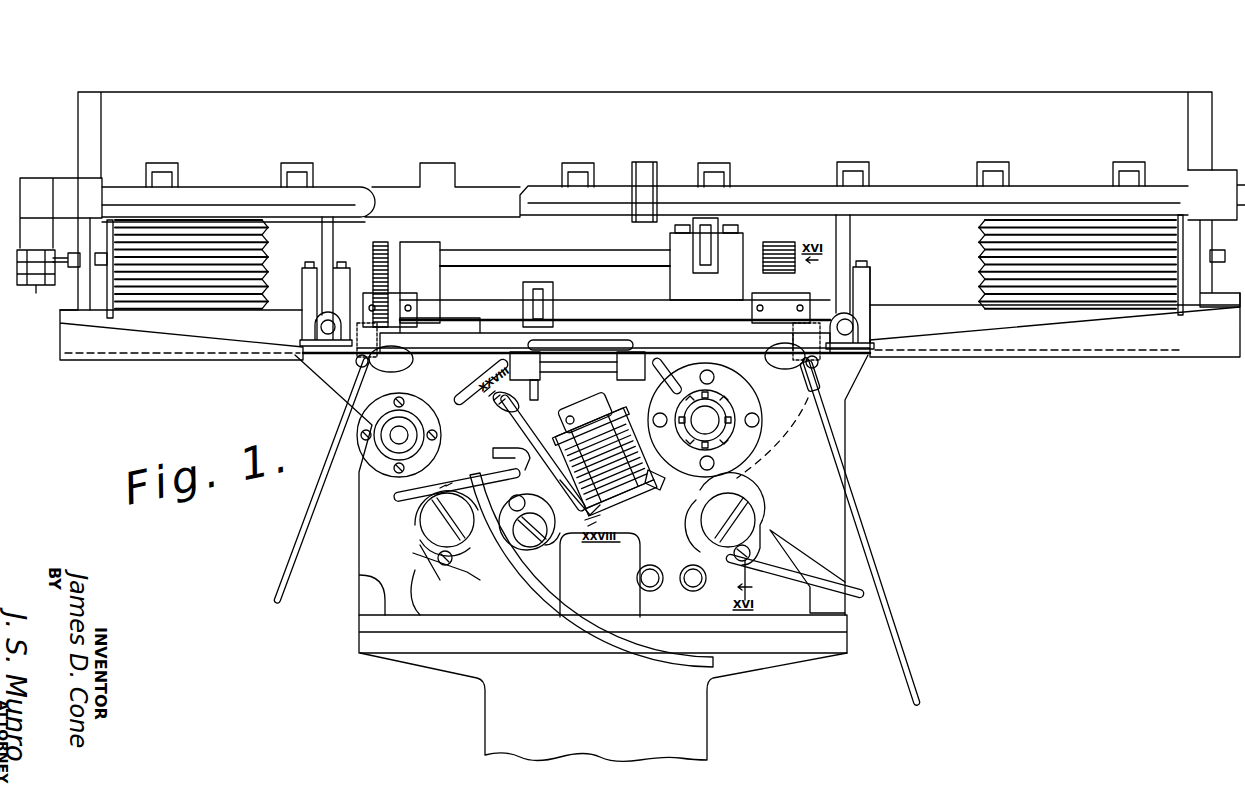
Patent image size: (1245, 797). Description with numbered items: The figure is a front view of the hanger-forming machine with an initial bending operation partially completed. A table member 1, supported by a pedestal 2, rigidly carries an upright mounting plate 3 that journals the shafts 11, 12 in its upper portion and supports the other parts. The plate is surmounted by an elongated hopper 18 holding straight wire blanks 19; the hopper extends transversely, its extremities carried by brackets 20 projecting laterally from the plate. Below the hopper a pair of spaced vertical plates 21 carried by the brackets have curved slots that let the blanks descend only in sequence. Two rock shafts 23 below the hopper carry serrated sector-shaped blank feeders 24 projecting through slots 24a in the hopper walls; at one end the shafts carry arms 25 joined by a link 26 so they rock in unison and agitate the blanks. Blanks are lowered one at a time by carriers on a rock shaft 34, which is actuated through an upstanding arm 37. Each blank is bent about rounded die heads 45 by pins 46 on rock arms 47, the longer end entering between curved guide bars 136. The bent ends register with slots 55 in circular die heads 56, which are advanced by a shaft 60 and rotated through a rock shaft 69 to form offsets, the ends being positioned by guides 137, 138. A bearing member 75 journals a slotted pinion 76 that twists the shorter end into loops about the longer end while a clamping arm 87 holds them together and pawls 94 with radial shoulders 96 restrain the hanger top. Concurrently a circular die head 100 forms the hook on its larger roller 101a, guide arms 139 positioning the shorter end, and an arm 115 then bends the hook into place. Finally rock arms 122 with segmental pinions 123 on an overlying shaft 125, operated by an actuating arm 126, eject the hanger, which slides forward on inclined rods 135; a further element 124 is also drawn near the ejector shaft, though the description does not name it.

The table member 1 is at (838, 658).
The pedestal 2 is at (706, 729).
The upright mounting plate 3 is at (846, 434).
The shaft 11 is at (707, 420).
The shaft 12 is at (396, 440).
The hopper 18 is at (1066, 92).
The hanger-forming blank 19 is at (264, 245).
The bracket 20 is at (101, 358).
The vertical plate 21 is at (336, 241).
The rock shaft 23 is at (917, 184).
The blank feeder 24 is at (852, 170).
The slot 24a is at (722, 162).
The arm 25 is at (42, 178).
The link 26 is at (37, 287).
The rock shaft 34 is at (597, 306).
The upstanding arm 37 is at (552, 300).
The rounded die head 45 is at (401, 375).
The pin 46 is at (362, 365).
The rock arm 47 is at (821, 379).
The slot 55 is at (437, 516).
The circular die head 56 is at (463, 542).
The shaft 60 is at (646, 574).
The rock shaft 69 is at (692, 584).
The bearing member 75 is at (653, 492).
The pinion 76 is at (630, 502).
The arm 87 is at (538, 443).
The pawl 94 is at (656, 382).
The radial shoulder 96 is at (635, 356).
The circular die head 100 is at (527, 532).
The roller 101a is at (592, 575).
The arm 115 is at (580, 505).
The rock arm 122 is at (870, 338).
The segmental pinion 123 is at (441, 246).
The gear 124 is at (378, 293).
The shaft 125 is at (537, 254).
The actuating arm 126 is at (713, 252).
The rod 135 is at (481, 400).
The guide bar 136 is at (677, 653).
The guide 137 is at (789, 541).
The guide 138 is at (806, 558).
The guide arm 139 is at (480, 478).